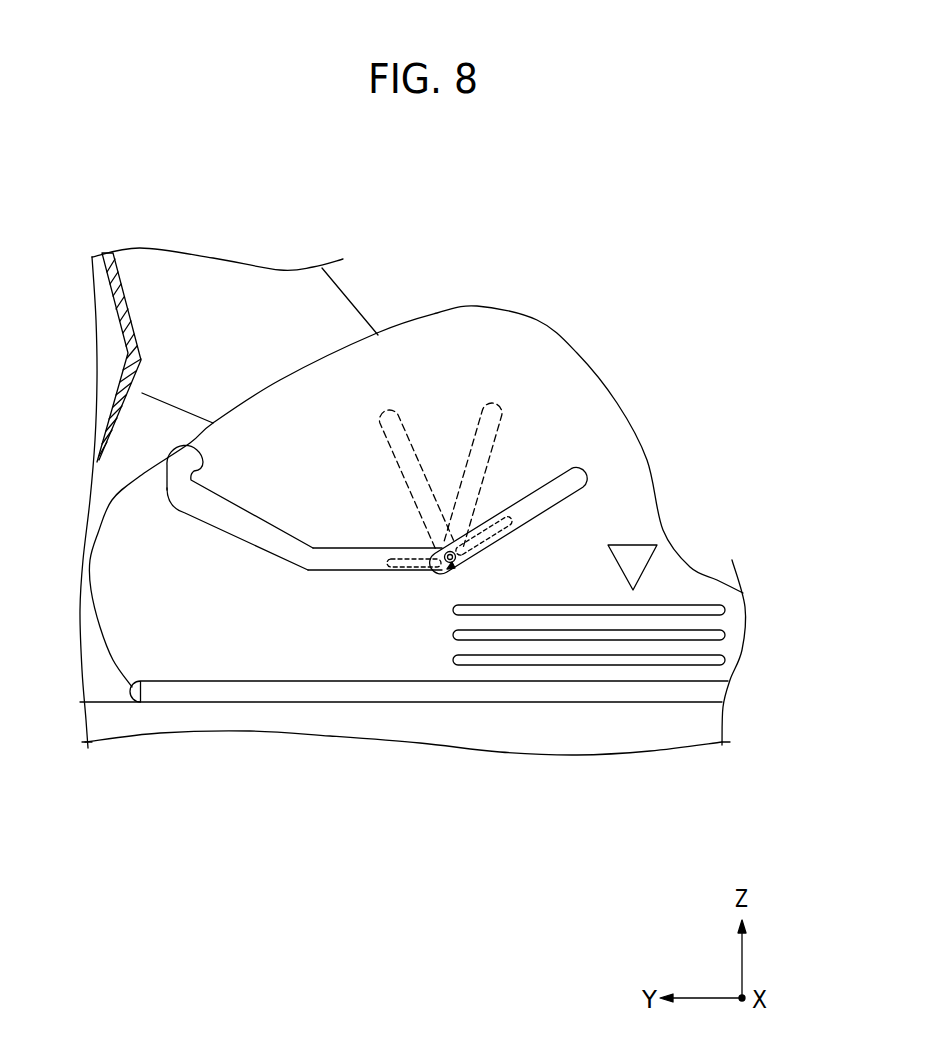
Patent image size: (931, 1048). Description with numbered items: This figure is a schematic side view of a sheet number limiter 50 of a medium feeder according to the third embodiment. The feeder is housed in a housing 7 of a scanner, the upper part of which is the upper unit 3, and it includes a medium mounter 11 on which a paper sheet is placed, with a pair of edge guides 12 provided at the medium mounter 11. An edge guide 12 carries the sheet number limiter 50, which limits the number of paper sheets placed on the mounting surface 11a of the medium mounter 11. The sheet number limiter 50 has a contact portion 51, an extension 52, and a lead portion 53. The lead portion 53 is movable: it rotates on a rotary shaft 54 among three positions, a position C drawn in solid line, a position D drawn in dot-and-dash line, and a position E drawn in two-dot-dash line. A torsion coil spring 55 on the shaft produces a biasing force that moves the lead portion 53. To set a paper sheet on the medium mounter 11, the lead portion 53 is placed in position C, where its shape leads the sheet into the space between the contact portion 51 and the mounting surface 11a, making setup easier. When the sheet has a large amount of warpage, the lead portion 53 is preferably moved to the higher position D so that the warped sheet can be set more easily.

The upper unit 3 is at (125, 294).
The housing 7 is at (168, 316).
The medium mounter 11 is at (535, 723).
The mounting surface 11a is at (235, 700).
The edge guide 12 is at (577, 357).
The sheet number limiter 50 is at (442, 368).
The contact portion 51 is at (443, 575).
The extension 52 is at (152, 493).
The lead portion 53 is at (583, 472).
The rotary shaft 54 is at (455, 567).
The torsion coil spring 55 is at (535, 540).